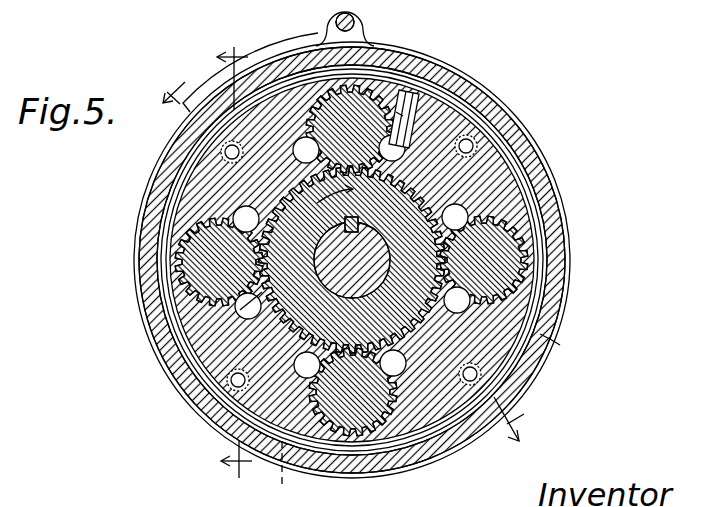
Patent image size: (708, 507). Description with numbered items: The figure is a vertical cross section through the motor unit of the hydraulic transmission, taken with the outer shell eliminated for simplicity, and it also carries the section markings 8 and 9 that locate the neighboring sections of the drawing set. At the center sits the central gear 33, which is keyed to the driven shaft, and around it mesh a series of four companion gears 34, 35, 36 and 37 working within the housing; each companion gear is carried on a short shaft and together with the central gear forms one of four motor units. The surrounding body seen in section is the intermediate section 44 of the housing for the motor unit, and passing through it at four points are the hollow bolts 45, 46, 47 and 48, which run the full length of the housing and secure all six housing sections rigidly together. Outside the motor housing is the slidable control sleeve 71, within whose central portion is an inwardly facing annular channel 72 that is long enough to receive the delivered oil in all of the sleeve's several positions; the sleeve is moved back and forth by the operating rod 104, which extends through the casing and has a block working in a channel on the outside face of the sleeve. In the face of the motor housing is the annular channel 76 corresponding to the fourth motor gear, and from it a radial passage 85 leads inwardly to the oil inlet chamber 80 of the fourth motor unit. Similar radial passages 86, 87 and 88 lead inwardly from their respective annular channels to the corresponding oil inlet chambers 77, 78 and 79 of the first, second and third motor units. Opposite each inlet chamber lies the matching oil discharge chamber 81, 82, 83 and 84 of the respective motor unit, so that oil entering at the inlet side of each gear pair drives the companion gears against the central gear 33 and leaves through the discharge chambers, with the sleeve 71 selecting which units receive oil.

The section line 8- 8 is at (346, 263).
The section line 9- 9 is at (234, 261).
The central gear 33 is at (401, 207).
The companion gear 34 is at (527, 250).
The companion gear 35 is at (371, 424).
The companion gear 36 is at (180, 281).
The companion gear 37 is at (404, 91).
The intermediate section 44 is at (494, 167).
The hollow bolt 45 is at (474, 143).
The hollow bolt 46 is at (480, 378).
The hollow bolt 47 is at (230, 384).
The hollow bolt 48 is at (222, 153).
The control sleeve 71 is at (576, 278).
The annular channel 72 is at (190, 262).
The annular channel 76 is at (243, 304).
The oil inlet chamber 77 is at (464, 306).
The oil inlet chamber 78 is at (295, 372).
The oil inlet chamber 79 is at (240, 217).
The oil inlet chamber 80 is at (400, 147).
The oil discharge chamber 81 is at (460, 213).
The oil discharge chamber 82 is at (405, 372).
The oil discharge chamber 83 is at (240, 310).
The oil discharge chamber 84 is at (303, 140).
The radial passage 85 is at (403, 116).
The radial passage 86 is at (564, 337).
The radial passage 87 is at (287, 474).
The radial passage 88 is at (200, 200).
The operating rod 104 is at (370, 24).